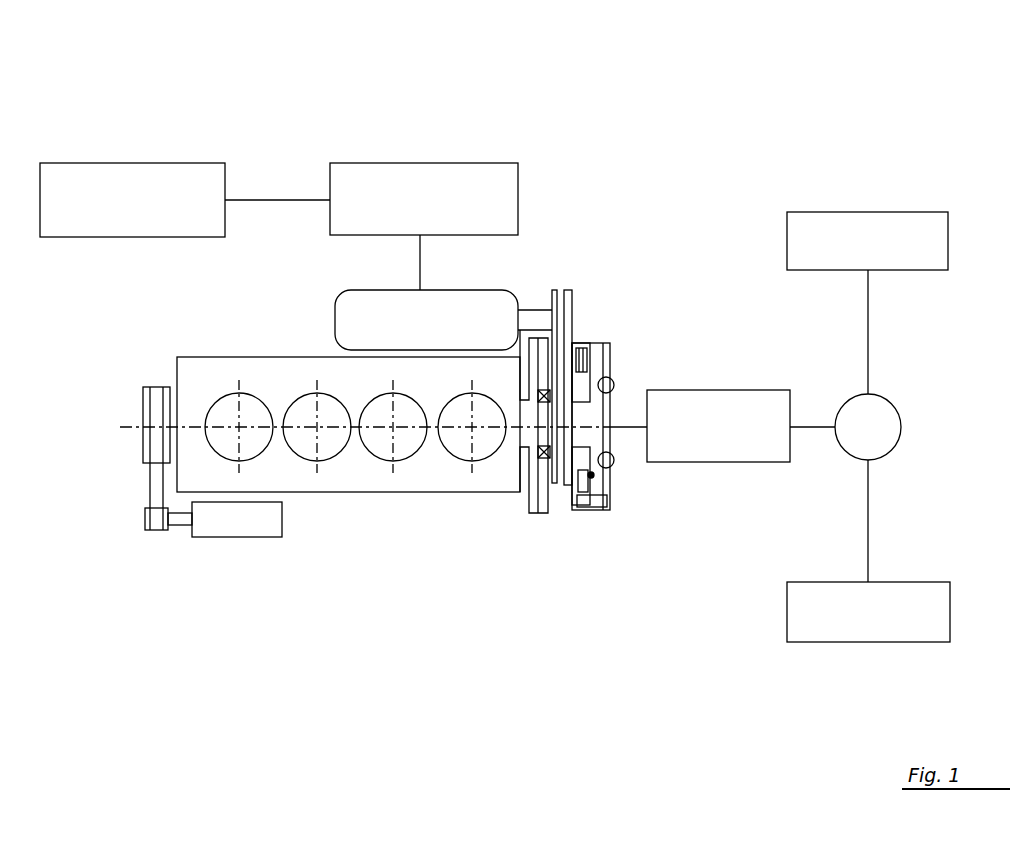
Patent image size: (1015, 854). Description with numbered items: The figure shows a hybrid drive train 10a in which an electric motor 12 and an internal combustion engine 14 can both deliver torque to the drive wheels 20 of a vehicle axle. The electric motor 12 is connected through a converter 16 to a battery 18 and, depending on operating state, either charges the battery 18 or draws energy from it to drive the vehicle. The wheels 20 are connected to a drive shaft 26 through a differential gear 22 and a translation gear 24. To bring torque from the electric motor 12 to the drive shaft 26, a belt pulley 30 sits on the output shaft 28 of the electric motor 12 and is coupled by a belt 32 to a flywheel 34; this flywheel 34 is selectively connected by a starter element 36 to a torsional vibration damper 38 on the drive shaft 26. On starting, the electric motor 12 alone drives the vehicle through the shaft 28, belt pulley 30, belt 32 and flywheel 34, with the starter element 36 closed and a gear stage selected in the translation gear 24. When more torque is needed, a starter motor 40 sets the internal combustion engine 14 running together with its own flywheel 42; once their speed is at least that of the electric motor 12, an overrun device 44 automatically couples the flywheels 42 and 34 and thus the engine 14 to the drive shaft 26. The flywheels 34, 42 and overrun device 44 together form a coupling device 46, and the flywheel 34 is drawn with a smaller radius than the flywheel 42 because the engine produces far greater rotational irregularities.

The drive train 10a is at (786, 110).
The electric motor 12 is at (433, 332).
The internal combustion engine 14 is at (370, 492).
The converter 16 is at (434, 216).
The battery 18 is at (140, 217).
The drive wheels 20 is at (879, 211).
The differential gear 22 is at (888, 398).
The translation gear 24 is at (731, 390).
The drive shaft 26 is at (632, 427).
The output shaft 28 is at (534, 310).
The belt pulley 30 is at (562, 292).
The belt 32 is at (570, 348).
The flywheel 34 is at (581, 381).
The starter element 36 is at (591, 475).
The torsional vibration damper 38 is at (617, 382).
The starter motor 40 is at (235, 537).
The flywheel 42 is at (542, 518).
The overrun device 44 is at (543, 470).
The coupling device 46 is at (562, 536).